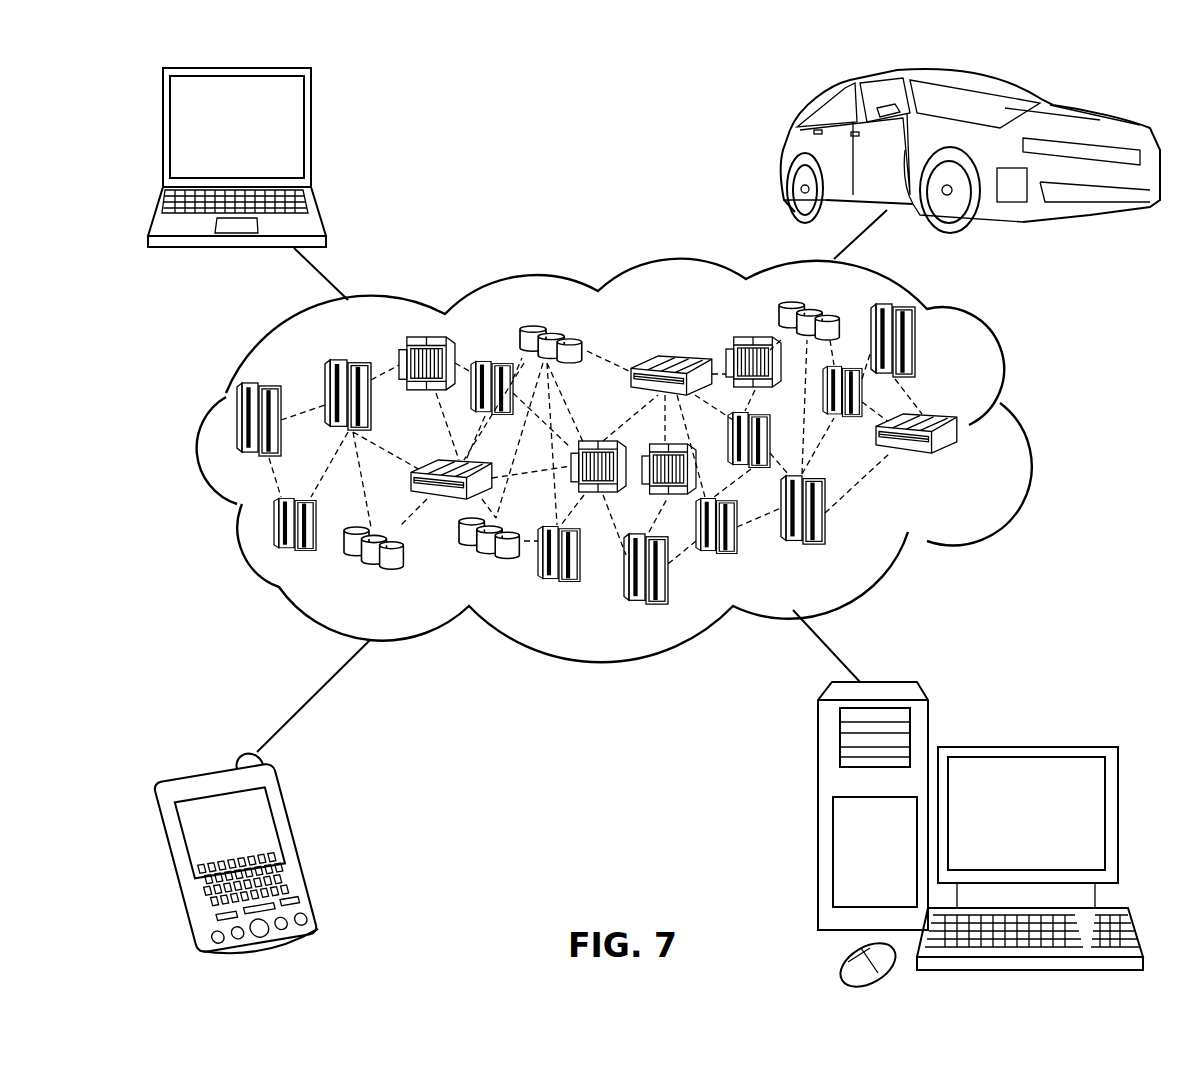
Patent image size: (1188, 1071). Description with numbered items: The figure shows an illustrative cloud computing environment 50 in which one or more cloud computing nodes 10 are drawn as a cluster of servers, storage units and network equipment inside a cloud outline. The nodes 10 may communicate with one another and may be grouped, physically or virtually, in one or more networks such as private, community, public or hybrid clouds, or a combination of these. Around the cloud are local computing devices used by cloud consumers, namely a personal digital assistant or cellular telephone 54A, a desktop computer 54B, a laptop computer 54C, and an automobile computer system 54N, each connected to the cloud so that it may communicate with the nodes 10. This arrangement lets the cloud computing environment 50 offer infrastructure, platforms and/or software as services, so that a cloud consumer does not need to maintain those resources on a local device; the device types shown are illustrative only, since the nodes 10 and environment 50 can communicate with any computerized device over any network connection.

The cloud computing node 10 is at (968, 466).
The cloud computing environment 50 is at (1027, 428).
The personal digital assistant or cellular telephone 54A is at (303, 843).
The desktop computer 54B is at (1025, 747).
The laptop computer 54C is at (311, 137).
The automobile computer system 54N is at (790, 152).